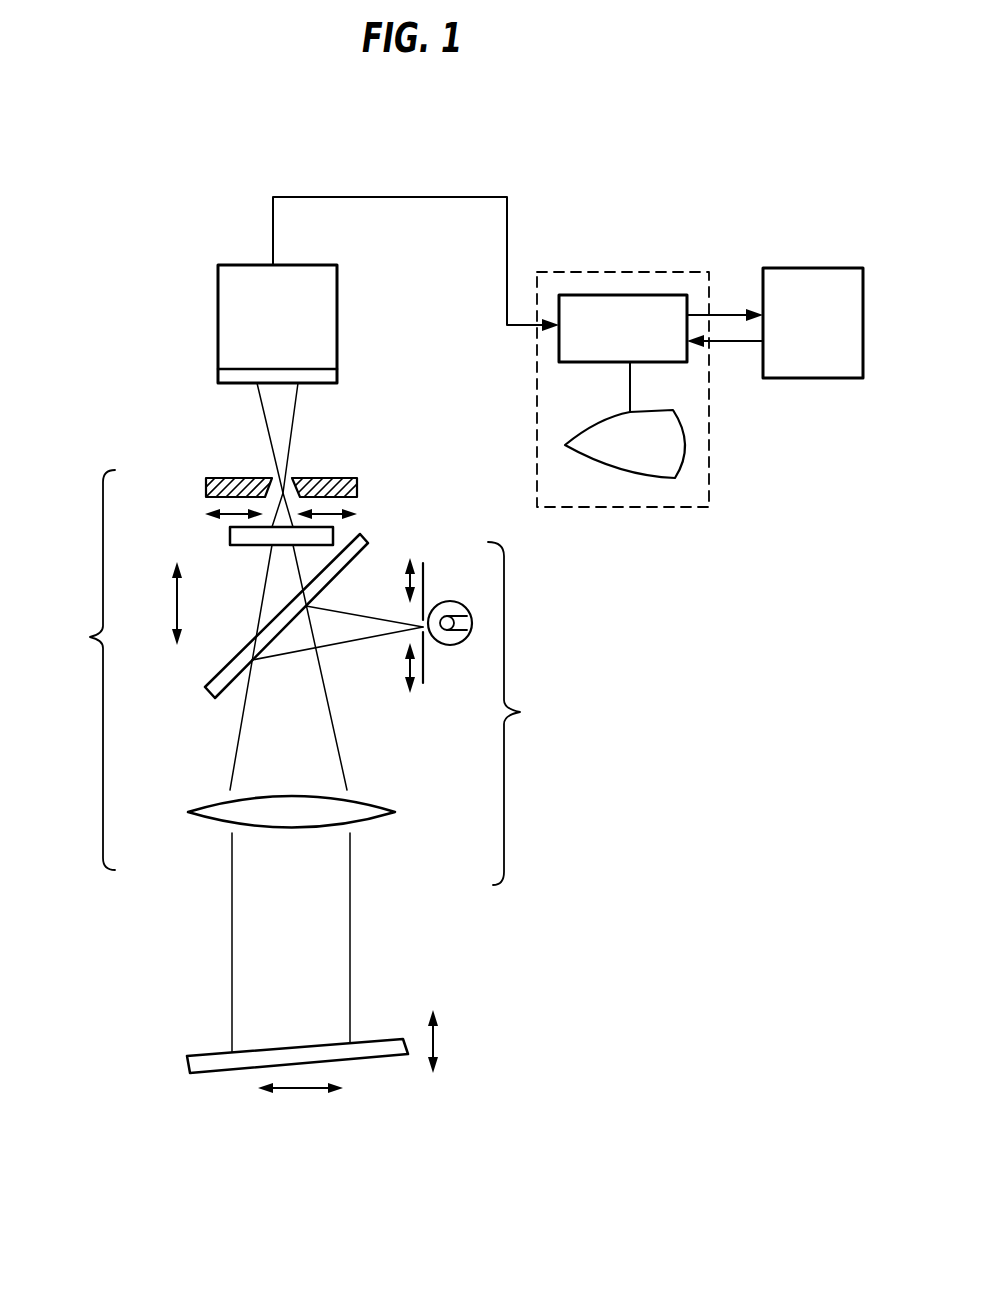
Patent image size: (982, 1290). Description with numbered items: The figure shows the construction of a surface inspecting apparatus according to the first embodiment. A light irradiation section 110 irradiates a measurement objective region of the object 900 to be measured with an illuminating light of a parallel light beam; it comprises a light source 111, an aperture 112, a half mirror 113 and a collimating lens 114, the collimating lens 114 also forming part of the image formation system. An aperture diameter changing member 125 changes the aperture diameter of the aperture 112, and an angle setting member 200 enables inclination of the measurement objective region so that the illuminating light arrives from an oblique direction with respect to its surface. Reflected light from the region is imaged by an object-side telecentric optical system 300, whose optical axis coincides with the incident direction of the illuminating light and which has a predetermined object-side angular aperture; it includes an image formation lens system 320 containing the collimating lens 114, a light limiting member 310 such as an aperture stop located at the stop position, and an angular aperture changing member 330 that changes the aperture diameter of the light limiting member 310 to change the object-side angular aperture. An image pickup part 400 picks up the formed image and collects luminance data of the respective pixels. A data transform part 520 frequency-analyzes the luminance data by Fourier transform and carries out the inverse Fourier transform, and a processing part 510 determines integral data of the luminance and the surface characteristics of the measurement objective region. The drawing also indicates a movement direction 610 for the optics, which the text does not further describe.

The light irradiation section 110 is at (537, 713).
The light source 111 is at (462, 603).
The aperture 112 is at (425, 660).
The half mirror 113 is at (213, 678).
The collimating lens 114 is at (205, 826).
The aperture diameter changing member 125 is at (407, 578).
The angle setting member 200 is at (440, 1040).
The object-side telecentric optical system 300 is at (66, 670).
The light limiting member 310 is at (328, 478).
The image formation lens system 320 is at (245, 547).
The angular aperture changing member 330 is at (232, 508).
The image pickup part 400 is at (337, 332).
The processing part 510 is at (595, 272).
The data transform part 520 is at (805, 268).
The lens movement direction 610 is at (175, 612).
The object to be measured 900 is at (210, 1053).